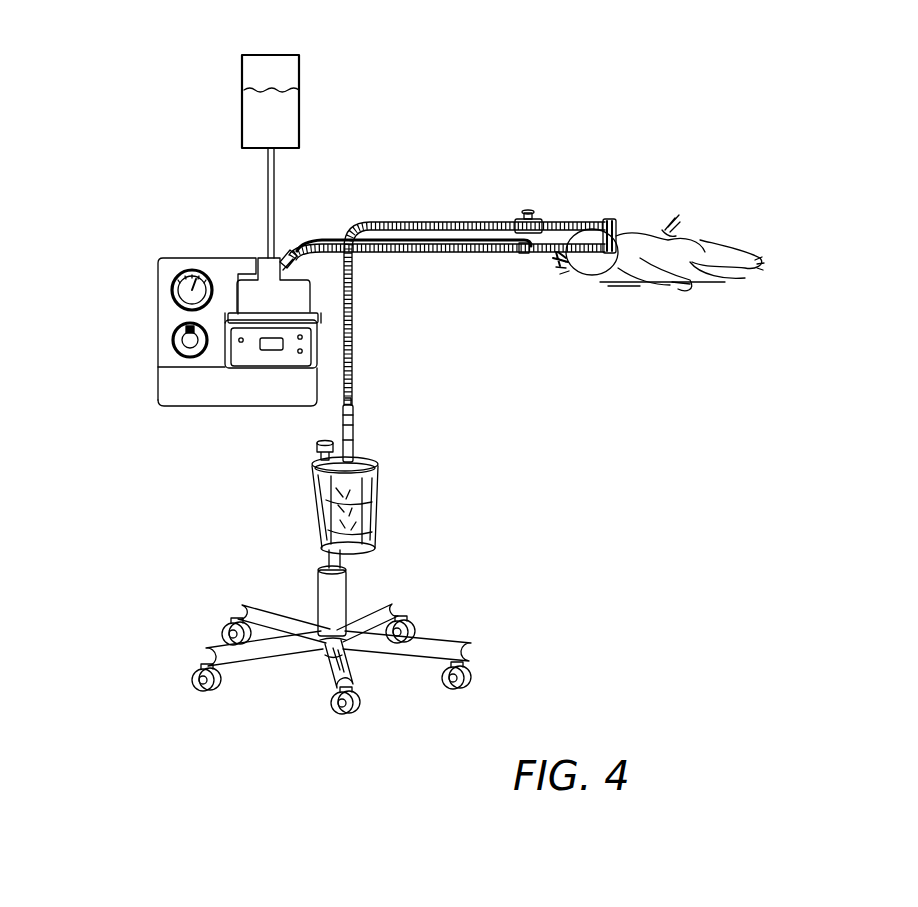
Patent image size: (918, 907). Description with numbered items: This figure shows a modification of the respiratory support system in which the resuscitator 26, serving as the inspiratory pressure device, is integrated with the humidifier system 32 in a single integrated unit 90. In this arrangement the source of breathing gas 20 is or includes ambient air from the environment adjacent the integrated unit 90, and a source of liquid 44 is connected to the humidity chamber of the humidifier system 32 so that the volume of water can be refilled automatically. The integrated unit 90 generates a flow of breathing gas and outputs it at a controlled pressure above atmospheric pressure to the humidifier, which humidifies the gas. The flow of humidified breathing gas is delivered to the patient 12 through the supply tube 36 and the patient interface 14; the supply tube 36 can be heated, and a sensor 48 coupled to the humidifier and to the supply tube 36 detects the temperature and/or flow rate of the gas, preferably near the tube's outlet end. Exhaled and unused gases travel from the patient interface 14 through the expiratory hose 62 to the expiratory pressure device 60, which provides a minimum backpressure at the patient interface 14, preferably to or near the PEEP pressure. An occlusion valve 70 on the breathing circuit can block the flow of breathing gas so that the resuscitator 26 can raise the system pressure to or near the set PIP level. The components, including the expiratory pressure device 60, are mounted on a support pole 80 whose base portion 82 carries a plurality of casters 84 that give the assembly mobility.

The integrated unit 90 is at (115, 178).
The source of breathing gas 20 is at (76, 410).
The source of liquid 44 is at (250, 118).
The resuscitator 26 is at (142, 291).
The humidifier system 32 is at (322, 302).
The supply tube 36 is at (474, 256).
The expiratory hose 62 is at (470, 218).
The occlusion valve 70 is at (526, 200).
The patient interface 14 is at (626, 216).
The sensor 48 is at (553, 262).
The patient 12 is at (644, 330).
The expiratory pressure device 60 is at (400, 503).
The support pole 80 is at (328, 560).
The base portion 82 is at (398, 616).
The casters 84 is at (470, 680).